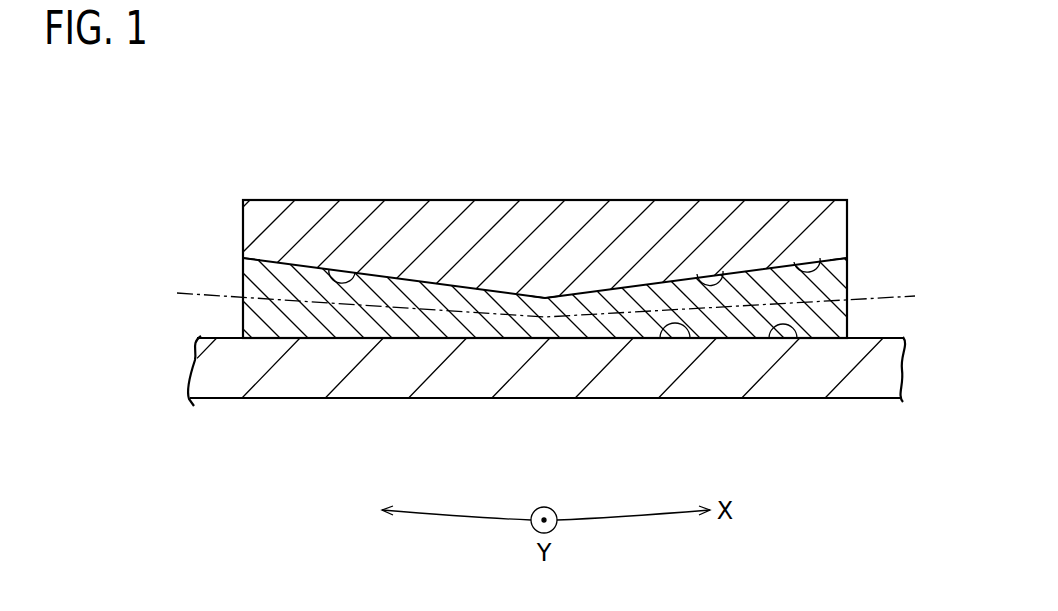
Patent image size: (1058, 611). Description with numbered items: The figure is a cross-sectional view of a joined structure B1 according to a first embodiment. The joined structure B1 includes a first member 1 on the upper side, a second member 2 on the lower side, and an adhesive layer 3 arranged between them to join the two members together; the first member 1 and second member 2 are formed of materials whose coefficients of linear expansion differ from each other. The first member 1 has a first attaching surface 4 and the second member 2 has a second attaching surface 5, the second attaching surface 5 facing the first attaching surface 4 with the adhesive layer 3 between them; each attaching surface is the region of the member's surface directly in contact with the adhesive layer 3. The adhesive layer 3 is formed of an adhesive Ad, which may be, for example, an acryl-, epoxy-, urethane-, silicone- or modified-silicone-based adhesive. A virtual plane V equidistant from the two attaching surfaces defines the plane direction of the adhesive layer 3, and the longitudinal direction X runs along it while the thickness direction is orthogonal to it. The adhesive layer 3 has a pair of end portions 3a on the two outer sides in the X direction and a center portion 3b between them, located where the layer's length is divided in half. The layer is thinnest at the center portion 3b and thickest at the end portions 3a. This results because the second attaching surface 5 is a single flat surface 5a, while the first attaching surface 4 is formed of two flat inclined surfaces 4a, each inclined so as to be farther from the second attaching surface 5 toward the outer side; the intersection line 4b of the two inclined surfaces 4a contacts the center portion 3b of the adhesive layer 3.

The joined structure B1 is at (272, 145).
The first member 1 is at (260, 197).
The second member 2 is at (230, 402).
The adhesive layer 3 is at (203, 318).
The end portions 3a is at (242, 280).
The center portion 3b is at (536, 332).
The first attaching surface 4 is at (723, 273).
The inclined surfaces 4a is at (329, 268).
The intersection line 4b is at (543, 290).
The second attaching surface 5 is at (793, 323).
The flat surface 5a is at (690, 327).
The adhesive Ad is at (363, 317).
The virtual plane V is at (893, 295).